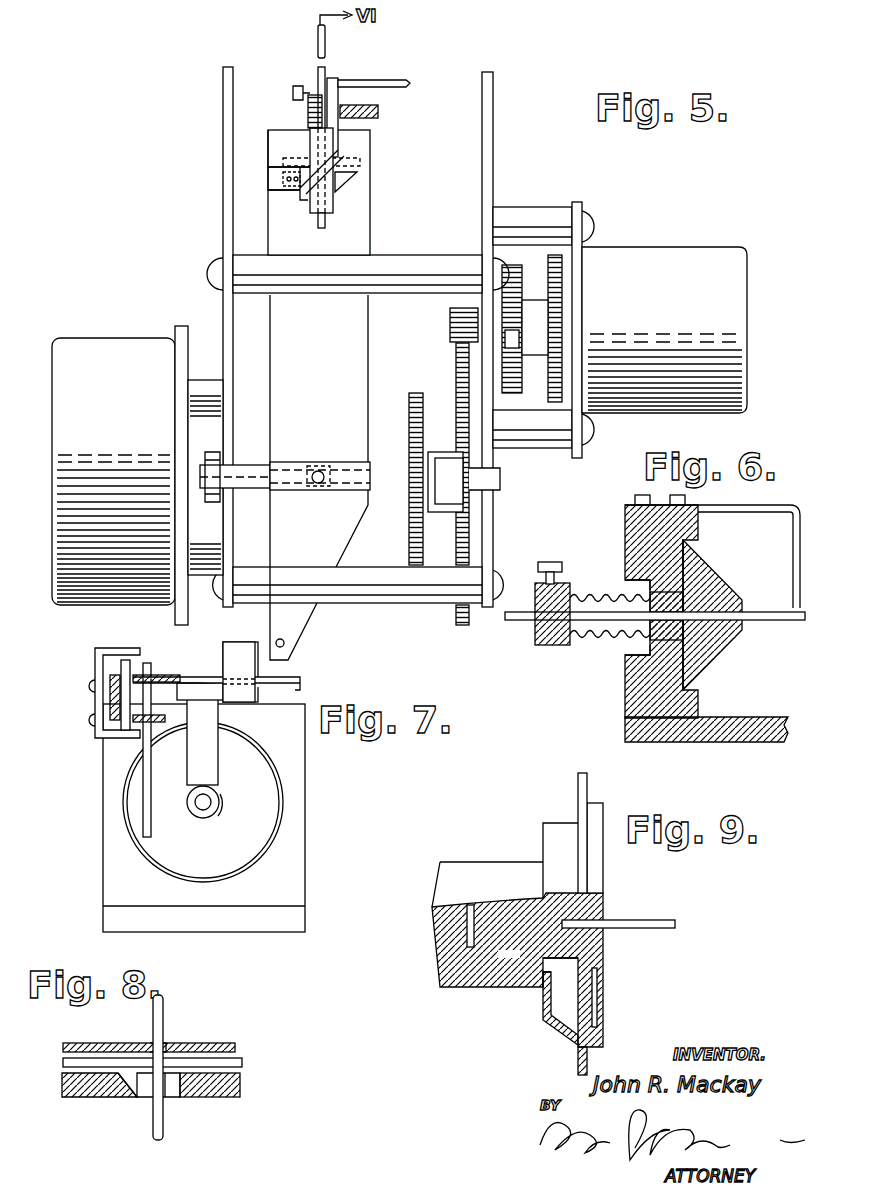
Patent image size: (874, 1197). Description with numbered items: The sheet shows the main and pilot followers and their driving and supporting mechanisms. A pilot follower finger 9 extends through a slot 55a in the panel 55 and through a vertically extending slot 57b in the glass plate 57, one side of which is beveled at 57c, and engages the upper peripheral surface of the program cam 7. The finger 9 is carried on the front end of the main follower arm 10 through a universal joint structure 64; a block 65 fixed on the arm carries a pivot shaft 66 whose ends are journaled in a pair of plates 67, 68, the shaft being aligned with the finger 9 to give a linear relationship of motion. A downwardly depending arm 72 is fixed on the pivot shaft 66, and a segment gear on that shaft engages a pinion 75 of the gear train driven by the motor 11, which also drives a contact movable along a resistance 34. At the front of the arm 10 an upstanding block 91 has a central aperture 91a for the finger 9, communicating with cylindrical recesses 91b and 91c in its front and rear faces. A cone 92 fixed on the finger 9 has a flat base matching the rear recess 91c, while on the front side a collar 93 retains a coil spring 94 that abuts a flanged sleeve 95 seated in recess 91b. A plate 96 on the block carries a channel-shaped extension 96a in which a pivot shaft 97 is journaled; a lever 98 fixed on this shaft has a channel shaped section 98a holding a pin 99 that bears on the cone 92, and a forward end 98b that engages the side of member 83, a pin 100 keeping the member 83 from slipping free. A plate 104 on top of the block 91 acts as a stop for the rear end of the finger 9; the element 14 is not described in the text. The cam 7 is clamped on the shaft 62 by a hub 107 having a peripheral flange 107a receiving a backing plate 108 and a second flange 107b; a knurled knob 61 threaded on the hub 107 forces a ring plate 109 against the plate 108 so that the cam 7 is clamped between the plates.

In FIG. 8, the program cam 7 is at (242, 1060).
In FIG. 9, the program cam 7 is at (587, 786).
In FIG. 5, the pilot follower finger 9 is at (318, 42).
In FIG. 6, the pilot follower finger 9 is at (510, 622).
In FIG. 7, the pilot follower finger 9 is at (204, 812).
In FIG. 8, the pilot follower finger 9 is at (163, 1128).
In FIG. 5, the main follower arm 10 is at (362, 324).
In FIG. 6, the main follower arm 10 is at (722, 742).
In FIG. 5, the motor 11 is at (663, 256).
In FIG. 6, the cam assembly 14 is at (733, 659).
In FIG. 5, the resistance 34 is at (120, 475).
In FIG. 8, the panel 55 is at (220, 1043).
In FIG. 8, the slot 55a is at (165, 1044).
In FIG. 8, the glass plate 57 is at (228, 1097).
In FIG. 8, the slot 57b is at (166, 1097).
In FIG. 8, the beveled surface 57c is at (132, 1097).
In FIG. 9, the knob 61 is at (503, 851).
In FIG. 9, the shaft 62 is at (640, 920).
In FIG. 5, the universal joint structure 64 is at (410, 152).
In FIG. 5, the block 65 is at (330, 470).
In FIG. 5, the pivot shaft 66 is at (242, 470).
In FIG. 5, the plate 67 is at (223, 171).
In FIG. 5, the plate 68 is at (493, 98).
In FIG. 5, the arm 72 is at (445, 460).
In FIG. 5, the pinion 75 is at (409, 430).
In FIG. 5, the member 83 is at (378, 111).
In FIG. 7, the member 83 is at (236, 642).
In FIG. 5, the block 91 is at (362, 145).
In FIG. 6, the block 91 is at (626, 524).
In FIG. 7, the block 91 is at (298, 818).
In FIG. 6, the central aperture 91a is at (628, 665).
In FIG. 6, the cylindrical recess 91b is at (628, 572).
In FIG. 6, the cylindrical recess 91c is at (692, 553).
In FIG. 7, the cylindrical recess 91c is at (262, 848).
In FIG. 5, the cone 92 is at (346, 182).
In FIG. 6, the cone 92 is at (716, 582).
In FIG. 7, the cone 92 is at (260, 770).
In FIG. 6, the collar 93 is at (538, 646).
In FIG. 5, the coil spring 94 is at (308, 112).
In FIG. 6, the coil spring 94 is at (586, 645).
In FIG. 6, the flanged sleeve 95 is at (652, 642).
In FIG. 5, the plate 96 is at (268, 142).
In FIG. 5, the channel-shaped extension 96a is at (268, 180).
In FIG. 7, the channel-shaped extension 96a is at (110, 742).
In FIG. 7, the pivot shaft 97 is at (118, 700).
In FIG. 7, the lever 98 is at (198, 680).
In FIG. 7, the channel shaped section 98a is at (178, 738).
In FIG. 5, the forward end of lever 98b is at (334, 80).
In FIG. 5, the pin 99 is at (300, 203).
In FIG. 7, the pin 99 is at (143, 794).
In FIG. 5, the pin 100 is at (402, 80).
In FIG. 7, the pin 100 is at (300, 686).
In FIG. 5, the plate 104 is at (342, 200).
In FIG. 6, the plate 104 is at (765, 508).
In FIG. 9, the hub 107 is at (603, 950).
In FIG. 9, the peripheral flange 107a is at (603, 980).
In FIG. 9, the flange 107b is at (603, 970).
In FIG. 9, the backing plate 108 is at (603, 1010).
In FIG. 9, the ring plate 109 is at (556, 1033).